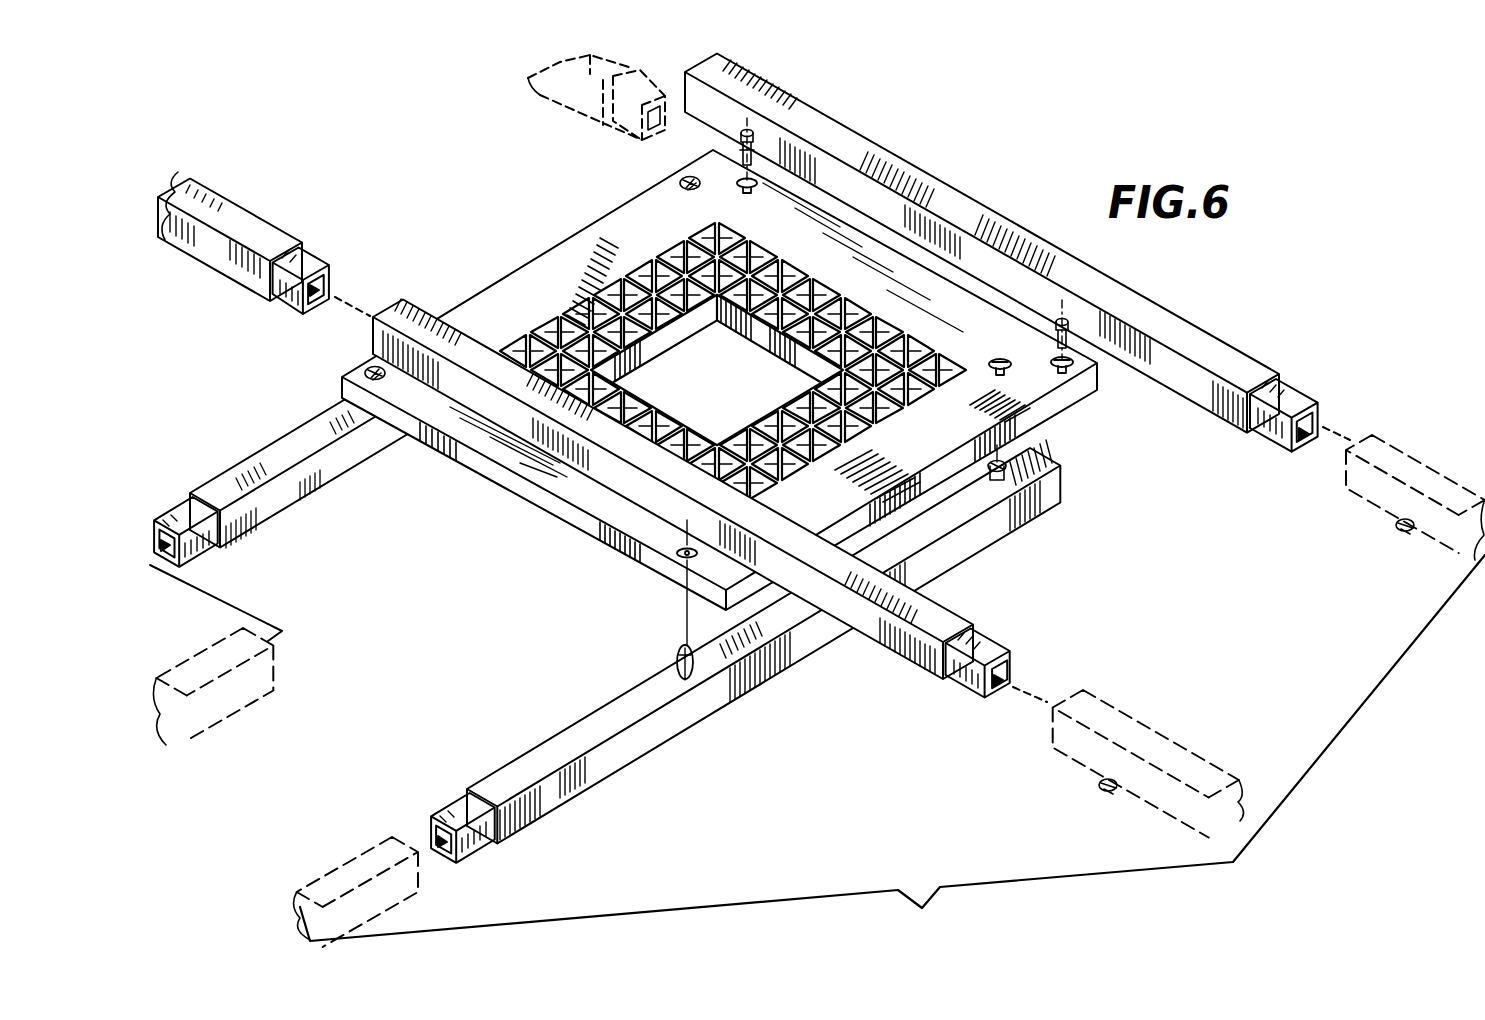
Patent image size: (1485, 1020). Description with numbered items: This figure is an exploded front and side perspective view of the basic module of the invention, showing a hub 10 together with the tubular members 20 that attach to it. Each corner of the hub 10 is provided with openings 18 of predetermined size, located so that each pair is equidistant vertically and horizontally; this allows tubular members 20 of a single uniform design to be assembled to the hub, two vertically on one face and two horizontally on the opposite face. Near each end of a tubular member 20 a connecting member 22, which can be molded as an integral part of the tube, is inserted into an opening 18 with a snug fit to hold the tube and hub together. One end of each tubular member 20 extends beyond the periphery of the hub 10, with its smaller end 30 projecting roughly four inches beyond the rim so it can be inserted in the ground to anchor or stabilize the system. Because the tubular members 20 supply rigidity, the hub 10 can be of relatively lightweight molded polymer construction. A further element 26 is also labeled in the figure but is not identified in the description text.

The hub 10 is at (519, 256).
The openings 18 is at (738, 177).
The tubular member 20 is at (292, 214).
The connecting member 22 is at (678, 663).
The screw 26 is at (683, 182).
The smaller end 30 is at (1300, 407).